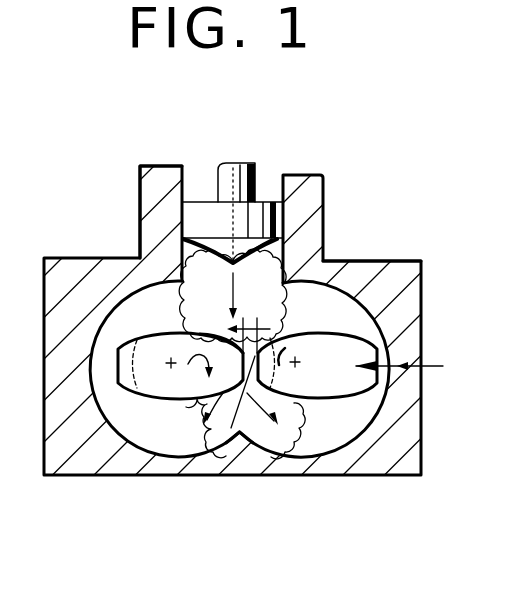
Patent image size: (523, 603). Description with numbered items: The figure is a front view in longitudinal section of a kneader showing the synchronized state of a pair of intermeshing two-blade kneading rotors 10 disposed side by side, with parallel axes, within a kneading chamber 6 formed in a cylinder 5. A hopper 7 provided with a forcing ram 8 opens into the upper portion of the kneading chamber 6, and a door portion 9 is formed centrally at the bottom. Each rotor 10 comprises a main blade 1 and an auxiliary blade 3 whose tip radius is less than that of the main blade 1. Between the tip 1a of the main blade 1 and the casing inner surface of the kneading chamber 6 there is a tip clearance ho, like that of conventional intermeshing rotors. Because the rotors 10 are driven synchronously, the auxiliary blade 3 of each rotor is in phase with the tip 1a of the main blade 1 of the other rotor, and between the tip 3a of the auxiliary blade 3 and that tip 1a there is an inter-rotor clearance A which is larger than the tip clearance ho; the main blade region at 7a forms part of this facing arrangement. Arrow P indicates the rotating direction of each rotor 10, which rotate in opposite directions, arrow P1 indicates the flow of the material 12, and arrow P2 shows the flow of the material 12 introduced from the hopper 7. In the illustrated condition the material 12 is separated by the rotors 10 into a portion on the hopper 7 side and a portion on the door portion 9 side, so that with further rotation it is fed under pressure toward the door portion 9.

The main blade 1 is at (353, 373).
The tip of the main blade 1a is at (387, 338).
The auxiliary blade 3 is at (118, 364).
The tip of the auxiliary blade 3a is at (236, 434).
The cylinder 5 is at (421, 262).
The kneading chamber 6 is at (157, 297).
The hopper 7 is at (265, 185).
The rotor lobe tip 7a is at (197, 333).
The forcing ram 8 is at (203, 217).
The door portion 9 is at (241, 438).
The kneading rotor 10 is at (151, 407).
The material 12 is at (249, 276).
The arrow P is at (195, 371).
The arrow P1 is at (277, 337).
The arrow P2 is at (233, 284).
The inter-rotor clearance A is at (248, 303).
The tip clearance ho is at (403, 357).